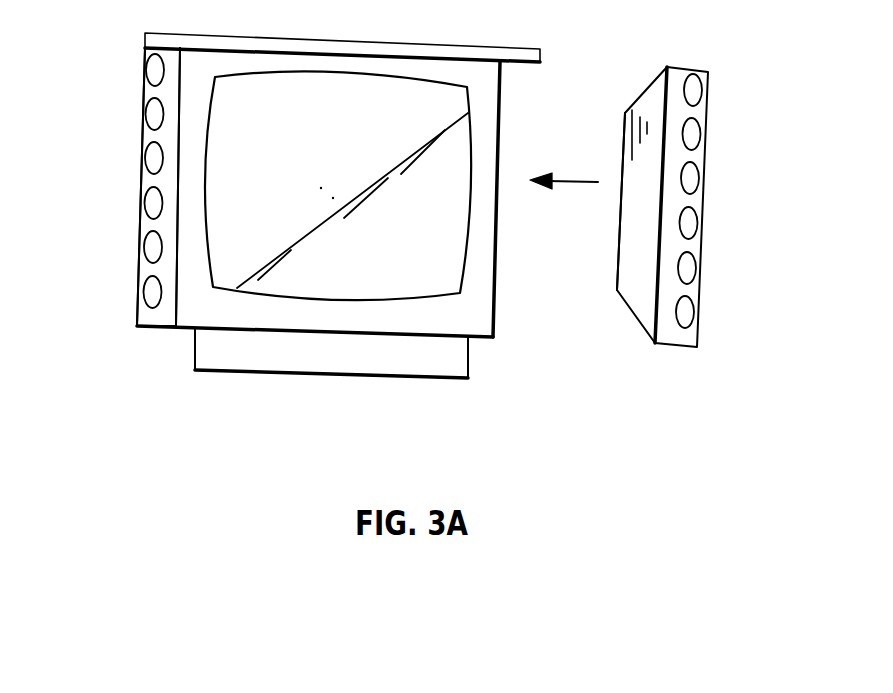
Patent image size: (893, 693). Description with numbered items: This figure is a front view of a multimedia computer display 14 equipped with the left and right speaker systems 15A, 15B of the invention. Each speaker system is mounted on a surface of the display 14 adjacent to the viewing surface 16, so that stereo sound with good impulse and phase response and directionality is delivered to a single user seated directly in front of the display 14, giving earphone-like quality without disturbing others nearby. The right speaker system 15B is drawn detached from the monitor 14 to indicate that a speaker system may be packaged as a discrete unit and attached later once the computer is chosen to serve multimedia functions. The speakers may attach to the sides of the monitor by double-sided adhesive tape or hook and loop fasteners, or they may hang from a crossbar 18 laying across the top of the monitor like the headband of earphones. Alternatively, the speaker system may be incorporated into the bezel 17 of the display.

The computer display 14 is at (302, 377).
The left speaker system 15A is at (140, 182).
The right speaker system 15B is at (702, 207).
The viewing surface 16 is at (348, 171).
The bezel 17 is at (470, 352).
The crossbar 18 is at (312, 40).